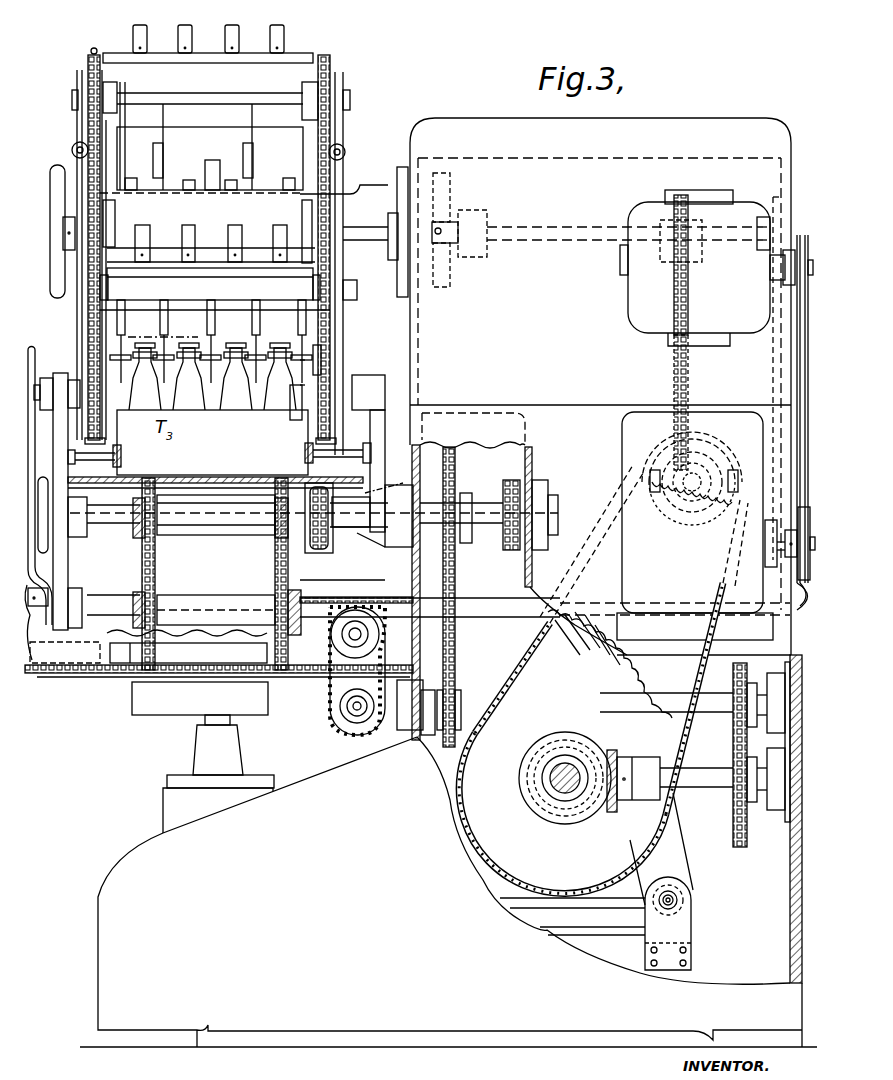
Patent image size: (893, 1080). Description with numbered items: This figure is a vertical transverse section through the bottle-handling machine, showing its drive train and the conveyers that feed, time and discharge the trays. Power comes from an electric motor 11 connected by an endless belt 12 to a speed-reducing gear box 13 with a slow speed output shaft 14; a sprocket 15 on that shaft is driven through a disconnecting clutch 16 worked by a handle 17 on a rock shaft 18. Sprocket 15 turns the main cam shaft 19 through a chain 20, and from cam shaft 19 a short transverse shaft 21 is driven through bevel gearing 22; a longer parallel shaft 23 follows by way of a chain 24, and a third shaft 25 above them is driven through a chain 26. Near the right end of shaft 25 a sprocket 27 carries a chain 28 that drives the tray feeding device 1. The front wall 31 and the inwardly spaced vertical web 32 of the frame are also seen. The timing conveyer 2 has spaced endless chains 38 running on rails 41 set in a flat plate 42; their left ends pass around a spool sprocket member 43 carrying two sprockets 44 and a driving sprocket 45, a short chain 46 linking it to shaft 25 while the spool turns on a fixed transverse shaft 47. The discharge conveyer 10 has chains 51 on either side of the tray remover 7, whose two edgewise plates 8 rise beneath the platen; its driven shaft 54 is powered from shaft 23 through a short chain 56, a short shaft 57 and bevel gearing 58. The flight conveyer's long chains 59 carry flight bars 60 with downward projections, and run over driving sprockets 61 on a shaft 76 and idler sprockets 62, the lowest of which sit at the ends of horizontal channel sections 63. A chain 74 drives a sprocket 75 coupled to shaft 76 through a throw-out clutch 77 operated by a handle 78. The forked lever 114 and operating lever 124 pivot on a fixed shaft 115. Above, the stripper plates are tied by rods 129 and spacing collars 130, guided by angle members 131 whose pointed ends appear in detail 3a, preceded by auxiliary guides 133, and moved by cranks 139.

The tray feeding device 1 is at (217, 5).
The timing conveyer 2 is at (423, 22).
The pointed ends of angle members 3a is at (108, 337).
The tray remover 7 is at (172, 715).
The plates 8 is at (237, 650).
The discharge conveyer 10 is at (318, 600).
The electric motor 11 is at (640, 306).
The endless belt 12 is at (781, 372).
The speed-reducing gear box 13 is at (622, 428).
The slow speed output shaft 14 is at (690, 492).
The sprocket 15 is at (725, 500).
The disconnecting clutch 16 is at (652, 462).
The handle 17 is at (38, 355).
The rock shaft 18 is at (483, 605).
The main cam shaft 19 is at (540, 780).
The chain 20 is at (540, 648).
The transverse shaft 21 is at (712, 742).
The bevel gearing 22 is at (608, 810).
The shaft 23 is at (682, 698).
The chain 24 is at (733, 733).
The shaft 25 is at (112, 540).
The chain 26 is at (460, 630).
The sprocket 27 is at (510, 482).
The chain 28 is at (520, 480).
The front wall 31 is at (412, 555).
The vertical web 32 is at (535, 558).
The endless chains 38 is at (155, 570).
The rails 41 is at (155, 488).
The flat plate 42 is at (205, 478).
The spool sprocket member 43 is at (225, 520).
The sprockets 44 is at (145, 535).
The driving sprocket 45 is at (330, 553).
The chain 46 is at (302, 545).
The fixed transverse shaft 47 is at (92, 545).
The endless chains 51 is at (68, 677).
The driven shaft 54 is at (340, 635).
The chain 56 is at (335, 698).
The short shaft 57 is at (350, 712).
The bevel gearing 58 is at (380, 735).
The flight chains 59 is at (88, 118).
The flight bars 60 is at (283, 50).
The driving sprockets 61 is at (85, 192).
The idler sprockets 62 is at (95, 50).
The channel sections 63 is at (98, 447).
The chain 74 is at (673, 370).
The sprocket 75 is at (690, 190).
The shaft 76 is at (350, 240).
The throw-out clutch 77 is at (450, 268).
The handle 78 is at (441, 228).
The forked lever 114 is at (655, 672).
The fixed shaft 115 is at (690, 885).
The operating lever 124 is at (588, 912).
The rods 129 is at (113, 133).
The spacing collars 130 is at (150, 118).
The angle members 131 is at (262, 362).
The auxiliary guides 133 is at (217, 348).
The cranks 139 is at (165, 155).